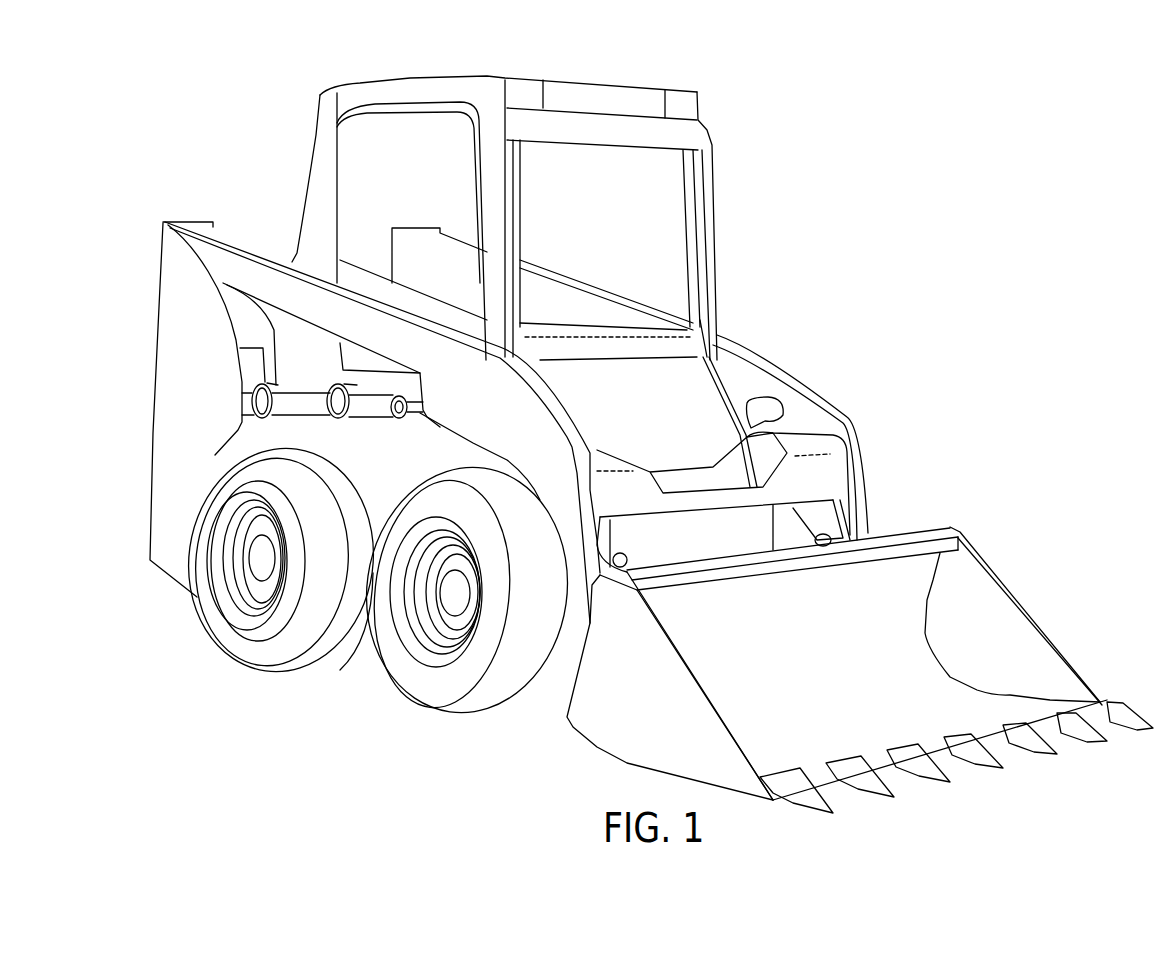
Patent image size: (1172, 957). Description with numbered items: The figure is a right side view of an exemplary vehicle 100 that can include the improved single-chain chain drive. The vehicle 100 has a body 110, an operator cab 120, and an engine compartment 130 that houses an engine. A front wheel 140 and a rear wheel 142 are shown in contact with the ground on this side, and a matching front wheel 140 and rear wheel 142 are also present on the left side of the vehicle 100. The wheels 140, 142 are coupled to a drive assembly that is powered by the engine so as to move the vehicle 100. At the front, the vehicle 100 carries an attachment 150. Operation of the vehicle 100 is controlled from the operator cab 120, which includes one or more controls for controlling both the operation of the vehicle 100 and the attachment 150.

The vehicle 100 is at (906, 159).
The body 110 is at (379, 473).
The operator cab 120 is at (328, 111).
The engine compartment 130 is at (163, 430).
The front wheel 140 is at (443, 653).
The rear wheel 142 is at (250, 613).
The attachment 150 is at (1078, 532).